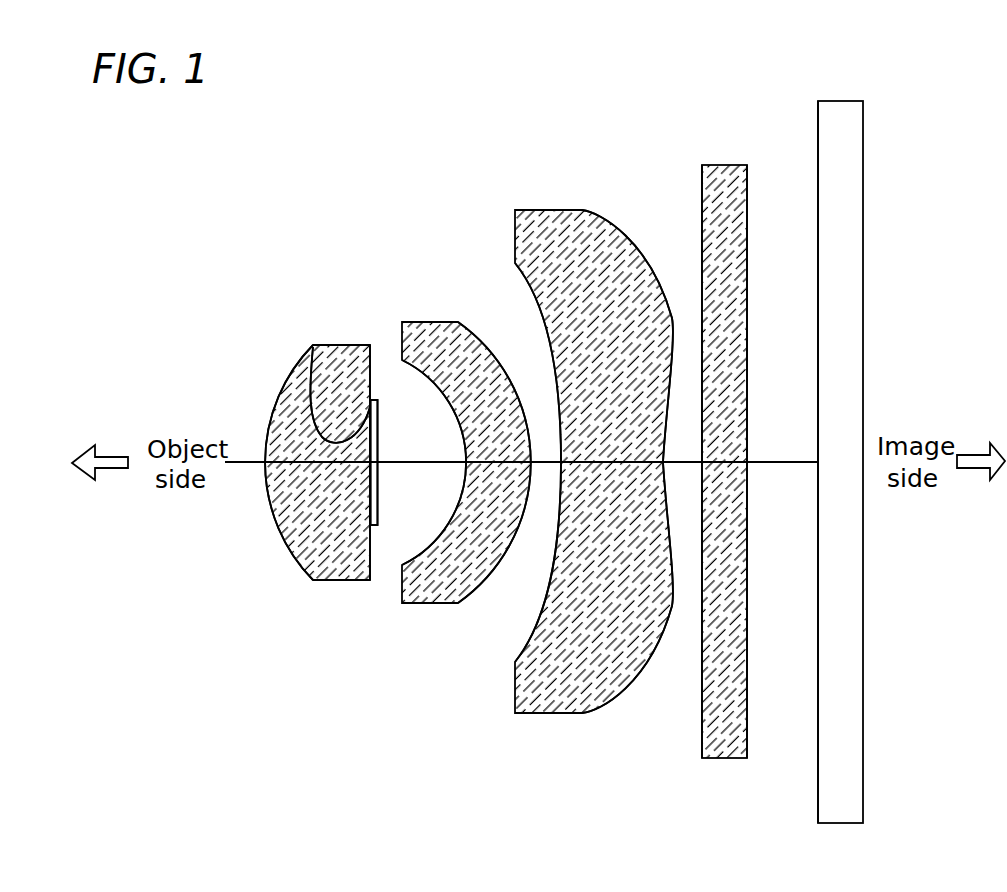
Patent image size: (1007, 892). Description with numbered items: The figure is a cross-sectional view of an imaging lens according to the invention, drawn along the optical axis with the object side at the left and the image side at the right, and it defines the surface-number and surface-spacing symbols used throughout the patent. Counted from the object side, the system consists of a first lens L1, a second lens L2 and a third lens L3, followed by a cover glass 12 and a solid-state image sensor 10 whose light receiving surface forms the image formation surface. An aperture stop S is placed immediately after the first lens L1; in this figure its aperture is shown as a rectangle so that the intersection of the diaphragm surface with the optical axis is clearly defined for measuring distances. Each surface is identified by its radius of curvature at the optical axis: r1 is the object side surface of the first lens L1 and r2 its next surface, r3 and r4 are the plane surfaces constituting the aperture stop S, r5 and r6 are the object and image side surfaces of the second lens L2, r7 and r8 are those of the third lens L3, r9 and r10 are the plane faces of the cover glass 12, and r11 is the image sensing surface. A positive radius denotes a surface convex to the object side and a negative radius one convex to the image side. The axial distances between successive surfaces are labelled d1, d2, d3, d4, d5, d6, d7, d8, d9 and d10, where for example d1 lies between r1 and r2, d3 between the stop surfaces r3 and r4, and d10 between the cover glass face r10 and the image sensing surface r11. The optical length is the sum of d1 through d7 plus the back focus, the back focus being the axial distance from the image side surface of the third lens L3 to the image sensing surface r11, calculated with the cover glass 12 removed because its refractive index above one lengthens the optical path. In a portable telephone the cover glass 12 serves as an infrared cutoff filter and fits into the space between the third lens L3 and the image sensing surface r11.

The first lens L1 is at (333, 345).
The second lens L2 is at (430, 322).
The third lens L3 is at (555, 210).
The aperture stop S is at (375, 400).
The cover glass 12 is at (716, 165).
The solid-state image sensor 10 is at (838, 101).
The radius of curvature on first surface r1 is at (283, 390).
The radius of curvature on second surface r2 is at (313, 345).
The radius of curvature on third surface r3 is at (350, 345).
The radius of curvature on fourth surface r4 is at (396, 398).
The radius of curvature on fifth surface r5 is at (448, 322).
The radius of curvature on sixth surface r6 is at (490, 343).
The radius of curvature on seventh surface r7 is at (515, 228).
The radius of curvature on eighth surface r8 is at (613, 223).
The radius of curvature on ninth surface r9 is at (702, 192).
The radius of curvature on tenth surface r10 is at (747, 192).
The image sensing surface r11 is at (818, 128).
The distance from first surface to second surface d1 is at (315, 463).
The distance from second surface to third surface d2 is at (355, 463).
The distance from third surface to fourth surface d3 is at (376, 525).
The distance from fourth surface to fifth surface d4 is at (418, 465).
The distance from fifth surface to sixth surface d5 is at (495, 465).
The distance from sixth surface to seventh surface d6 is at (541, 465).
The distance from seventh surface to eighth surface d7 is at (612, 465).
The distance from eighth surface to ninth surface d8 is at (680, 465).
The distance from ninth surface to tenth surface d9 is at (725, 465).
The distance from tenth surface to eleventh surface d10 is at (785, 465).